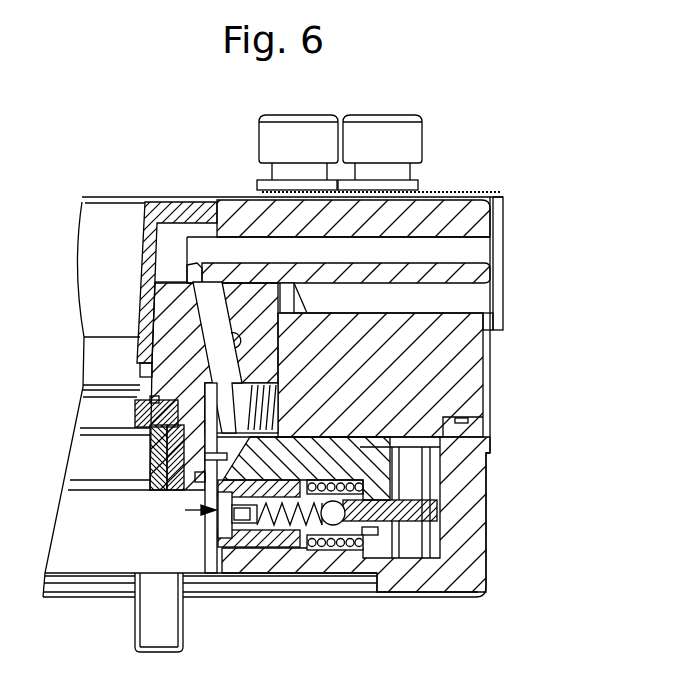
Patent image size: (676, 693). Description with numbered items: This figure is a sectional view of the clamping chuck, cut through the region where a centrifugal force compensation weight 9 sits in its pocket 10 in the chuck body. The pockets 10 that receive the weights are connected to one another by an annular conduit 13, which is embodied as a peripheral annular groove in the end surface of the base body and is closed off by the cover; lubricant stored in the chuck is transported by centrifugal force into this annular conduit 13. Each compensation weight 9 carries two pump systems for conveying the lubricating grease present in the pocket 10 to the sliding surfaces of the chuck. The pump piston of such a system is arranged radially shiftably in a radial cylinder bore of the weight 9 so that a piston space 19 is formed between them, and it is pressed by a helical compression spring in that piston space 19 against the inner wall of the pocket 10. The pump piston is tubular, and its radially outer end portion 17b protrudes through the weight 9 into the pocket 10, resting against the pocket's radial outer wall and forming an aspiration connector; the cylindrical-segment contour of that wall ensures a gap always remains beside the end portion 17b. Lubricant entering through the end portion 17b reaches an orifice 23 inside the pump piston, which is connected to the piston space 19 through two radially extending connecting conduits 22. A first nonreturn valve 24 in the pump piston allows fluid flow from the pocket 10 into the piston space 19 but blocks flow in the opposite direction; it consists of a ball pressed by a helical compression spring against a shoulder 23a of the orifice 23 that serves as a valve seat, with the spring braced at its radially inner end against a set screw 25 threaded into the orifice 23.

The centrifugal force compensation weight 9 is at (385, 469).
The pocket 10 is at (432, 547).
The annular conduit 13 is at (483, 452).
The radially outer end portion 17b is at (468, 528).
The piston space 19 is at (347, 532).
The connecting conduit 22 is at (325, 528).
The orifice 23 is at (289, 530).
The shoulder 23a is at (373, 537).
The first nonreturn valve 24 is at (185, 510).
The set screw 25 is at (244, 530).